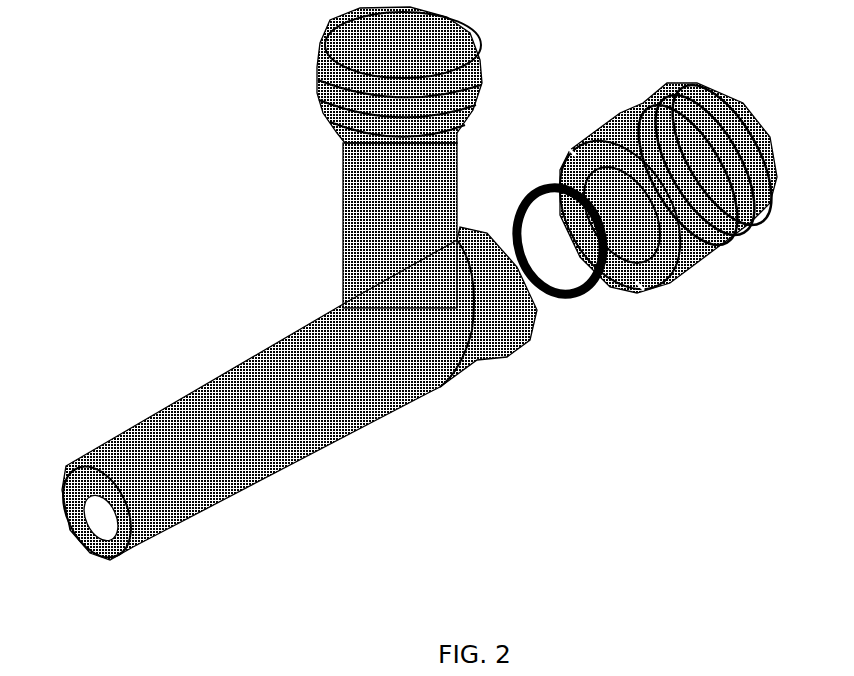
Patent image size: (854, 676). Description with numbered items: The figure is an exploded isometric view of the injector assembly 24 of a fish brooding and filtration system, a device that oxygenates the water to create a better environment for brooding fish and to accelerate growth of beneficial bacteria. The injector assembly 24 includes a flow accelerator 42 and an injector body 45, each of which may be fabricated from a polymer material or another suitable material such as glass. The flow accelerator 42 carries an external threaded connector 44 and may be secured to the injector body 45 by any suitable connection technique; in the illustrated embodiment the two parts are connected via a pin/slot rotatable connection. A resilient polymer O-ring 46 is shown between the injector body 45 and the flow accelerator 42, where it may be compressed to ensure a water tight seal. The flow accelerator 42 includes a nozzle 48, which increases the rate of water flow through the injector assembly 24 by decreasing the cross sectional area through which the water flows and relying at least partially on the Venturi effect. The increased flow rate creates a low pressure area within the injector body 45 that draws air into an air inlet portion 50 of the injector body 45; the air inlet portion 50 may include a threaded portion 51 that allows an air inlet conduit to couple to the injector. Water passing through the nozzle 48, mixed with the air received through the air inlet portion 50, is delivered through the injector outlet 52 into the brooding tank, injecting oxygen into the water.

The injector assembly 24 is at (540, 398).
The flow accelerator 42 is at (679, 206).
The external threaded connector 44 is at (765, 212).
The injector body 45 is at (428, 388).
The resilient polymer O-ring 46 is at (587, 297).
The nozzle 48 is at (568, 150).
The air inlet portion 50 is at (345, 190).
The threaded portion 51 is at (317, 73).
The injector outlet 52 is at (78, 555).